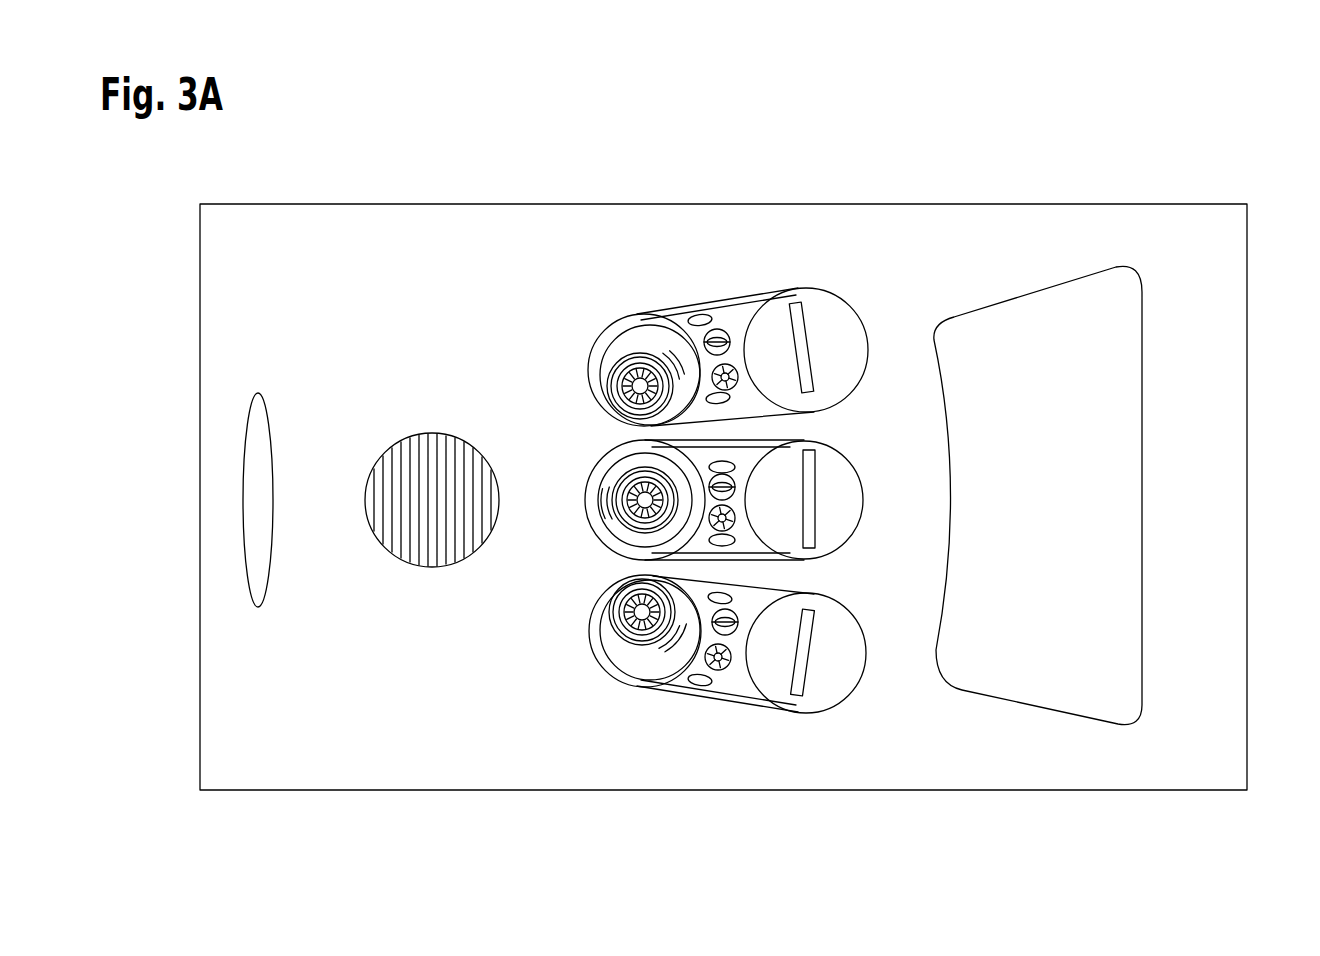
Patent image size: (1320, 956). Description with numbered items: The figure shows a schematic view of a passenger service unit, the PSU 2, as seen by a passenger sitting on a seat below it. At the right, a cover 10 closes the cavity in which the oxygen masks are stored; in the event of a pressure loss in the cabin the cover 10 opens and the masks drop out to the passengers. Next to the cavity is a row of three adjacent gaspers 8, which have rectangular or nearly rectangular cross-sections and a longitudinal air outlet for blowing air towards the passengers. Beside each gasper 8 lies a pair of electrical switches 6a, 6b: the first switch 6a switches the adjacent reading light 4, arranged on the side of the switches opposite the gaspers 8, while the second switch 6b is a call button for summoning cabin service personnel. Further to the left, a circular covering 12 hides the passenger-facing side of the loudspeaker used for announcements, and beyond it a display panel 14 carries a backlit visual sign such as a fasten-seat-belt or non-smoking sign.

The PSU 2 is at (1184, 166).
The reading light 4 is at (628, 358).
The first switch 6a is at (747, 355).
The second switch 6b is at (719, 325).
The aircraft passenger cabin gasper 8 is at (818, 326).
The cover 10 is at (1123, 371).
The covering 12 is at (421, 458).
The display panel 14 is at (246, 492).